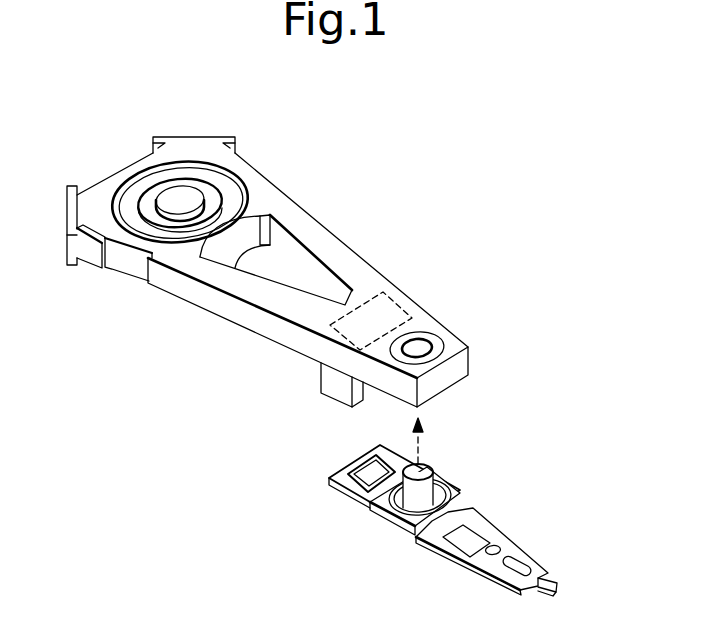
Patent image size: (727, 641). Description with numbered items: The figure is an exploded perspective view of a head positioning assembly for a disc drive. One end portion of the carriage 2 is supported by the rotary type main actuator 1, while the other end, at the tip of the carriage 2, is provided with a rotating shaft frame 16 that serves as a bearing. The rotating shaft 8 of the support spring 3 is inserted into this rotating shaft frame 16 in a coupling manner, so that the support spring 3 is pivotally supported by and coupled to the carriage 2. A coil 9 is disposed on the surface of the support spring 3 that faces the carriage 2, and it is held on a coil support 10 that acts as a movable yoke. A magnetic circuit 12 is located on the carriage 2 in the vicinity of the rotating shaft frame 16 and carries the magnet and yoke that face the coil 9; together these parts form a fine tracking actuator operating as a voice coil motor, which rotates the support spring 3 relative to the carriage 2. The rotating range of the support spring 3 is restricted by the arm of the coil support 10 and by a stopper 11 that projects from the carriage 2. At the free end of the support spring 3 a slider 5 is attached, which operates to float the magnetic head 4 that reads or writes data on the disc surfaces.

The rotary type main actuator 1 is at (170, 207).
The carriage 2 is at (316, 240).
The support spring 3 is at (478, 522).
The magnetic head 4 is at (560, 590).
The slider 5 is at (557, 580).
The rotating shaft 8 is at (410, 498).
The coil 9 is at (348, 474).
The coil support 10 is at (345, 496).
The stopper 11 is at (332, 385).
The magnetic circuit 12 is at (405, 302).
The rotating shaft frame 16 is at (440, 346).